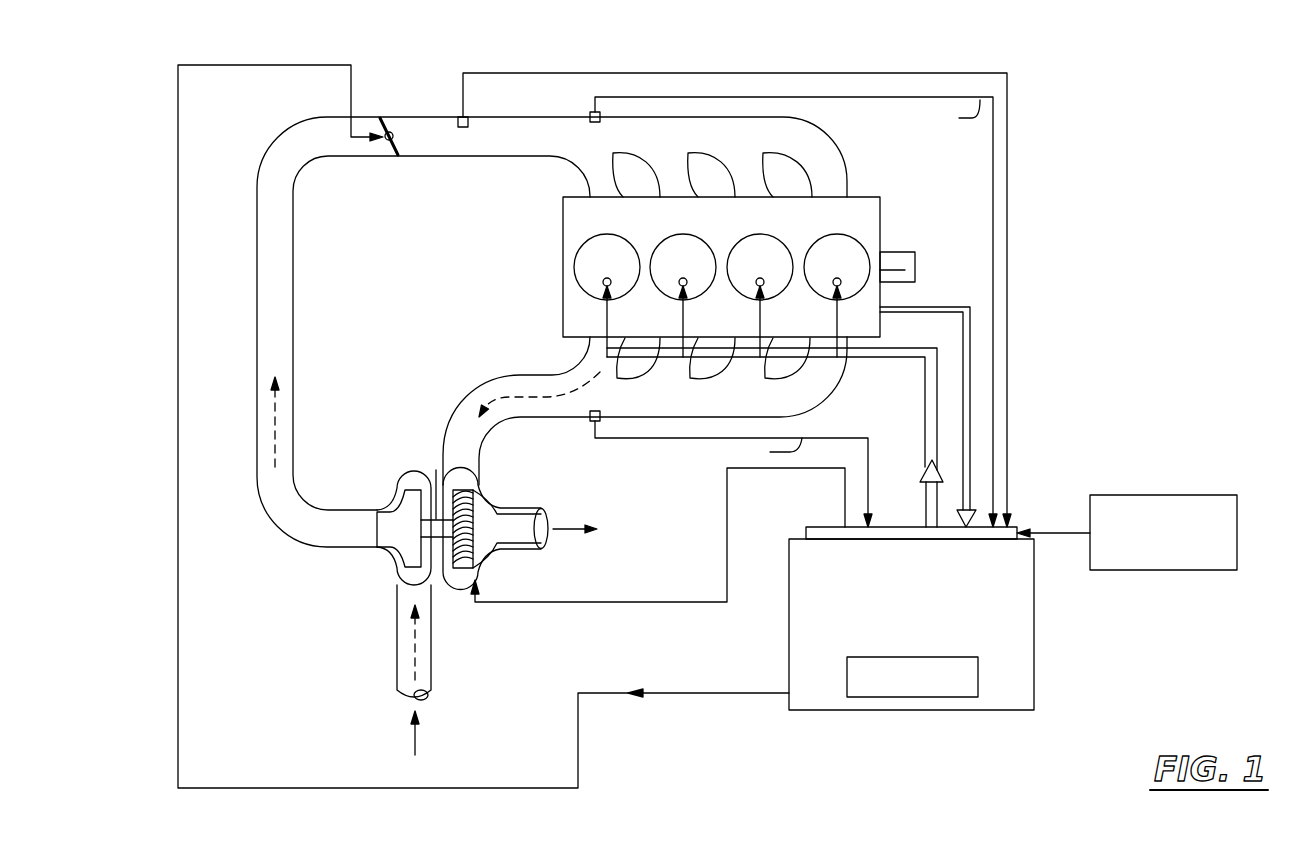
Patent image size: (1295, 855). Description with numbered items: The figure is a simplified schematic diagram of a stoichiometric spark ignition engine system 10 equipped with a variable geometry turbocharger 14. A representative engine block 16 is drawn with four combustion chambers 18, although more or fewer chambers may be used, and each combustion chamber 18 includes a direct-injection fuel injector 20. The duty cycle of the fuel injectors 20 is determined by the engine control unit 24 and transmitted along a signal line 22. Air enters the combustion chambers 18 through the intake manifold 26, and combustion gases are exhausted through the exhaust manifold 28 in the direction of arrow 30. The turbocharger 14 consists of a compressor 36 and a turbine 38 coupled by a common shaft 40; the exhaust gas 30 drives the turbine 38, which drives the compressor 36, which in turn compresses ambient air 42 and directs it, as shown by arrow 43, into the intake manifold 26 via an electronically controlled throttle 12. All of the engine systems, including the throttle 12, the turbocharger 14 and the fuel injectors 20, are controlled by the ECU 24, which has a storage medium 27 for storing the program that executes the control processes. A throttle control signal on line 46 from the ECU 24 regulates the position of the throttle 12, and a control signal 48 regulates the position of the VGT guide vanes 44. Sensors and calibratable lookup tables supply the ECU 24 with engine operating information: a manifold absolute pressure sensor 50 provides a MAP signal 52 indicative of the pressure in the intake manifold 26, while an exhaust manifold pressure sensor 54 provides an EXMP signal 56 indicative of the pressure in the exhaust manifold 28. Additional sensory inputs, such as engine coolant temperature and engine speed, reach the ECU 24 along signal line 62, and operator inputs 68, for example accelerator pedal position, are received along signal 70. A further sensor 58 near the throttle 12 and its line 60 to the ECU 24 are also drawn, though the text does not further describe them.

The engine system 10 is at (1103, 228).
The electronically controlled throttle 12 is at (396, 147).
The variable geometry turbocharger 14 is at (433, 460).
The engine block 16 is at (870, 208).
The combustion chambers 18 is at (770, 235).
The direct-injection fuel injector 20 is at (832, 285).
The signal line 22 is at (925, 428).
The engine control unit 24 is at (1034, 602).
The intake manifold 26 is at (812, 126).
The storage medium 27 is at (978, 675).
The exhaust manifold 28 is at (835, 388).
The exhaust gas flow arrow 30 is at (533, 397).
The compressor 36 is at (380, 553).
The turbine 38 is at (500, 551).
The common shaft 40 is at (440, 537).
The ambient air 42 is at (412, 735).
The compressed air flow arrow 43 is at (275, 422).
The VGT guide vanes 44 is at (460, 497).
The throttle control signal line 46 is at (752, 695).
The VGT control signal 48 is at (620, 602).
The manifold absolute pressure sensor 50 is at (590, 112).
The MAP signal 52 is at (993, 122).
The exhaust manifold pressure sensor 54 is at (590, 420).
The EXMP signal 56 is at (683, 440).
The throttle position sensor 58 is at (458, 120).
The throttle position sensor signal line 60 is at (1007, 218).
The signal line 62 is at (970, 365).
The operator inputs 68 is at (1163, 495).
The operator input signal 70 is at (1055, 533).